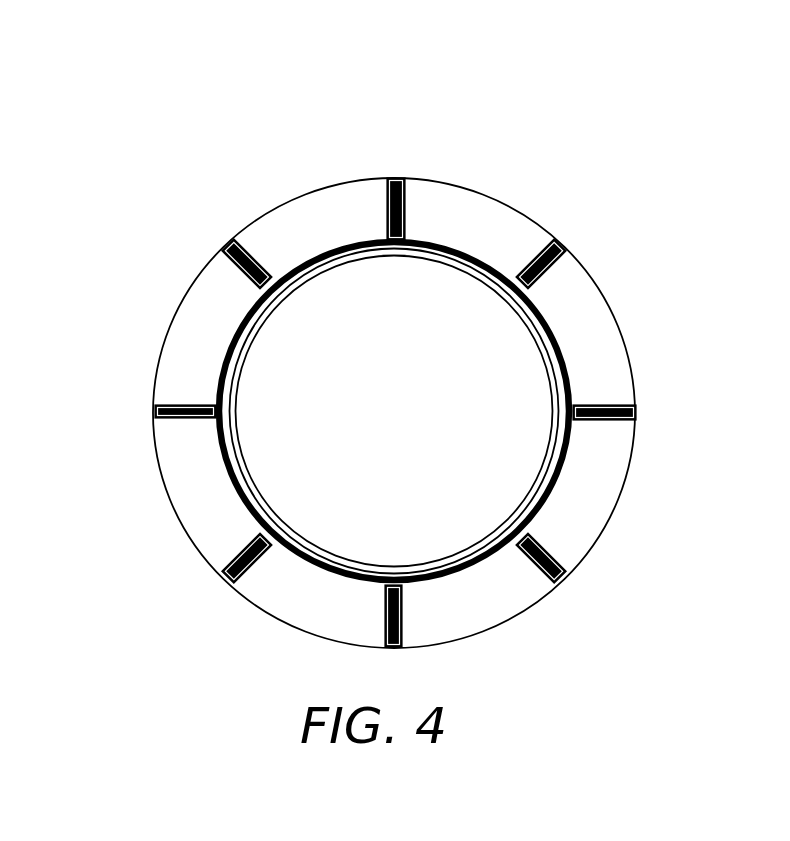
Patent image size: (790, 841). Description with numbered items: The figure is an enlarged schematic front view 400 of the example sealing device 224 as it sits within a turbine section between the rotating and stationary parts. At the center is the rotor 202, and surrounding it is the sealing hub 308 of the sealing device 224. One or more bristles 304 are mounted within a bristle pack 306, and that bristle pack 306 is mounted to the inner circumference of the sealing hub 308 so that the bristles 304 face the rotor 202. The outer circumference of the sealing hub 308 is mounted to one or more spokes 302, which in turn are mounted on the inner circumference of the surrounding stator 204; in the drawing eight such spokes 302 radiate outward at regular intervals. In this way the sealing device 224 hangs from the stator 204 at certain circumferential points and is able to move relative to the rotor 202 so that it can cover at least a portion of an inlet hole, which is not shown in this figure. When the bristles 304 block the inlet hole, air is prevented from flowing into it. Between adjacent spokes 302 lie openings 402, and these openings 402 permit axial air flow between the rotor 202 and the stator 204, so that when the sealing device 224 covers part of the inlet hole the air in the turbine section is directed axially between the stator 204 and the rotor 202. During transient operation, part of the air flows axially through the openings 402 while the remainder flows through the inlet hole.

The front view 400 is at (118, 112).
The sealing device 224 is at (607, 237).
The stator 204 is at (615, 310).
The rotor 202 is at (520, 464).
The spokes 302 is at (387, 197).
The bristles 304 is at (342, 563).
The bristle pack 306 is at (250, 502).
The sealing hub 308 is at (224, 385).
The opening 402 is at (555, 535).